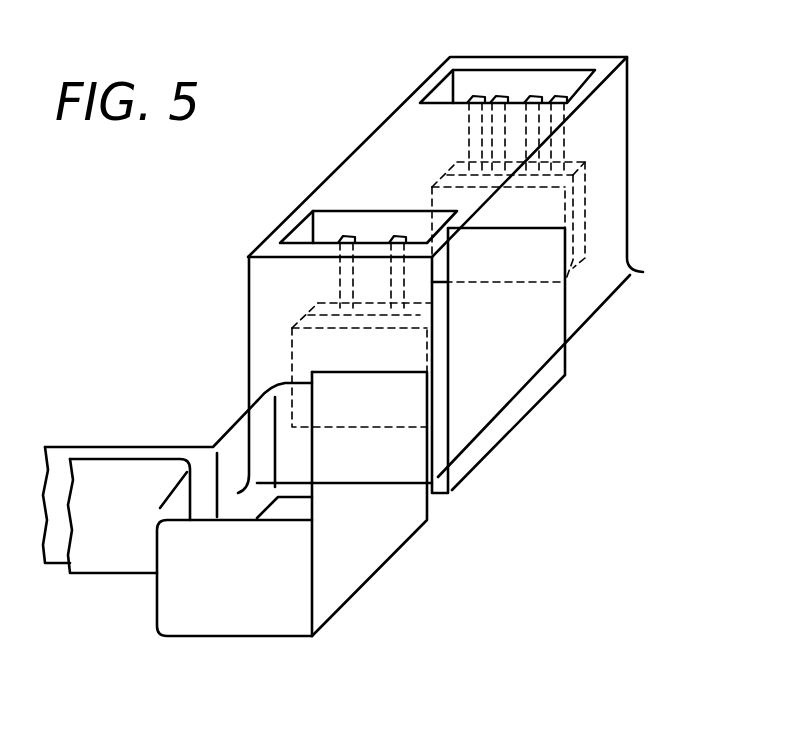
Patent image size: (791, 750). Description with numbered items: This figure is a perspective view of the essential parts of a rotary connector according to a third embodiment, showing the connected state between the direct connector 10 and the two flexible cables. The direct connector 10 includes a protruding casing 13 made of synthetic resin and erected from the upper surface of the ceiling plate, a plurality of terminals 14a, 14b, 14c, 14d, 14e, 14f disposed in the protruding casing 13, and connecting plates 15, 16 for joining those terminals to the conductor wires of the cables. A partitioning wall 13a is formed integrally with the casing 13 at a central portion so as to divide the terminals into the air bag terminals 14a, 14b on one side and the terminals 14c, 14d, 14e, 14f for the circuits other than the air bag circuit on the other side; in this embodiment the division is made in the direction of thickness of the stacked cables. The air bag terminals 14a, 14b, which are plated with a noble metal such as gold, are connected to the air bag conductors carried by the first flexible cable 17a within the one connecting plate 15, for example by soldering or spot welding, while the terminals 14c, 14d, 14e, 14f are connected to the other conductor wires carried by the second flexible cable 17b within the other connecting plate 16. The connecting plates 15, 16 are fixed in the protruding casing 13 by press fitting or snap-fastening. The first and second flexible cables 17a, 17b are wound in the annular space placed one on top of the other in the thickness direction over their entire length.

The direct connector 10 is at (627, 167).
The protruding casing 13 is at (268, 238).
The partitioning wall 13a is at (378, 153).
The terminal 14a is at (337, 237).
The terminal 14b is at (392, 235).
The terminal 14c is at (478, 97).
The terminal 14d is at (500, 97).
The terminal 14e is at (533, 97).
The terminal 14f is at (558, 97).
The connecting plate 15 is at (398, 430).
The connecting plate 16 is at (587, 238).
The first flexible cable 17a is at (100, 470).
The second flexible cable 17b is at (200, 462).